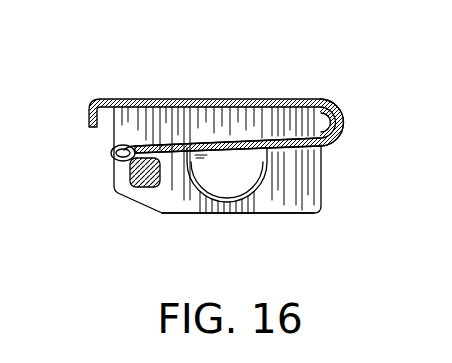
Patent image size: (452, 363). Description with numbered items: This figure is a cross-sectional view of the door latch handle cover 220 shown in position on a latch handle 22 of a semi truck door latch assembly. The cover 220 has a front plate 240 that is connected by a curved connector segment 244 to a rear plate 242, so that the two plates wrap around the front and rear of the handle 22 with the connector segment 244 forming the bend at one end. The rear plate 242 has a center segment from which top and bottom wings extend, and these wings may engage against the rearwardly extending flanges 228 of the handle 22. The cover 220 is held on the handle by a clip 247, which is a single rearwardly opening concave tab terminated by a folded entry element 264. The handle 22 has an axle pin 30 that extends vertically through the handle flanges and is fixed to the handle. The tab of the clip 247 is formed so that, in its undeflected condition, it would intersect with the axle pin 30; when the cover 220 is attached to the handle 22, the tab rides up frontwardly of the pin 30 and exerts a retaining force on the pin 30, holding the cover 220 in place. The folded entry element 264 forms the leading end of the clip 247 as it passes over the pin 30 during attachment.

The cover 220 is at (306, 68).
The front plate 240 is at (233, 97).
The curved connector segment 244 is at (343, 123).
The rear plate 242 is at (280, 148).
The rearwardly extending flanges 228 is at (322, 178).
The folded entry element 264 is at (113, 151).
The clip 247 is at (127, 157).
The axle pin 30 is at (143, 190).
The latch handle 22 is at (306, 214).